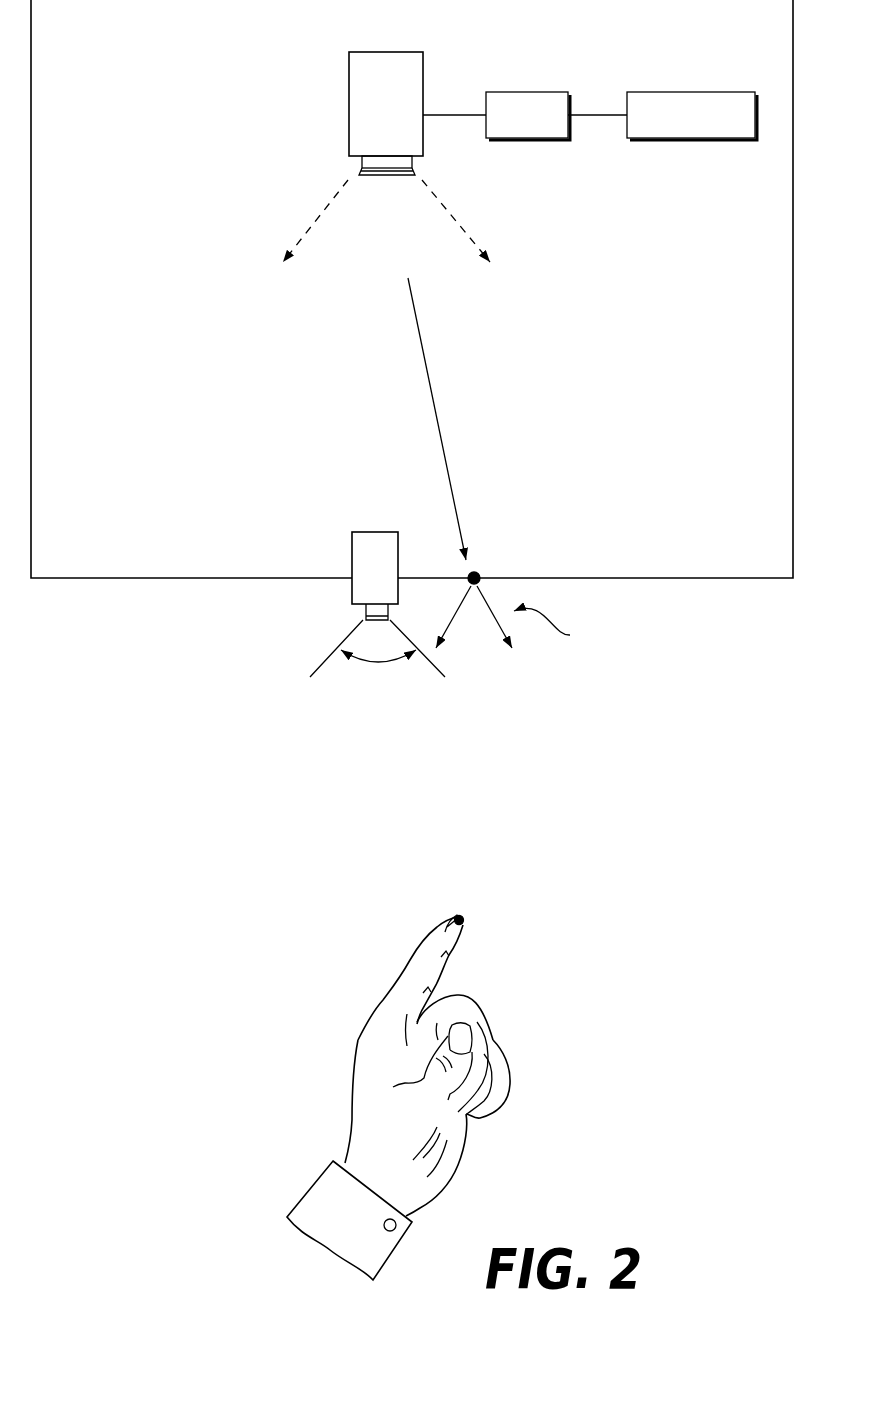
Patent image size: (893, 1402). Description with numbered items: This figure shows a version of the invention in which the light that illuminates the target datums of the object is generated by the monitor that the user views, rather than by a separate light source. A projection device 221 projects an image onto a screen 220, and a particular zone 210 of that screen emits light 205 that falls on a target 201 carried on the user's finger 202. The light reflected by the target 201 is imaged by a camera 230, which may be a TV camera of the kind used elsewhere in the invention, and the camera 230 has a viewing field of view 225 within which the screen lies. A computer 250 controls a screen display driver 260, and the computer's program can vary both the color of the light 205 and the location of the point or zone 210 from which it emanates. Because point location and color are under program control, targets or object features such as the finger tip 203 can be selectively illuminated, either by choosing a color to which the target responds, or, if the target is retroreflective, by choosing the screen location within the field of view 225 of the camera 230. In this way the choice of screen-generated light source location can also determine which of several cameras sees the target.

The target 201 is at (464, 917).
The finger 202 is at (452, 964).
The finger tip 203 is at (455, 914).
The light 205 is at (566, 630).
The zone of screen 210 is at (480, 570).
The screen 220 is at (722, 578).
The projection device 221 is at (349, 110).
The viewing field of view 225 is at (378, 664).
The camera 230 is at (374, 532).
The computer 250 is at (684, 92).
The screen display driver 260 is at (520, 92).